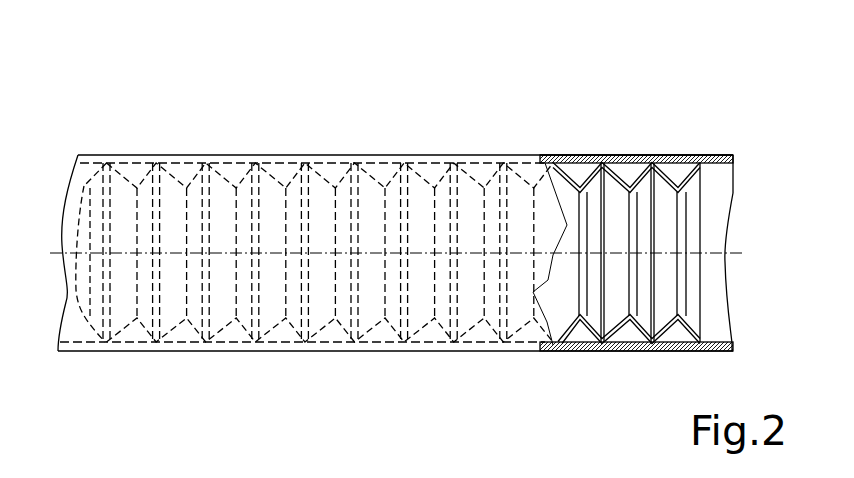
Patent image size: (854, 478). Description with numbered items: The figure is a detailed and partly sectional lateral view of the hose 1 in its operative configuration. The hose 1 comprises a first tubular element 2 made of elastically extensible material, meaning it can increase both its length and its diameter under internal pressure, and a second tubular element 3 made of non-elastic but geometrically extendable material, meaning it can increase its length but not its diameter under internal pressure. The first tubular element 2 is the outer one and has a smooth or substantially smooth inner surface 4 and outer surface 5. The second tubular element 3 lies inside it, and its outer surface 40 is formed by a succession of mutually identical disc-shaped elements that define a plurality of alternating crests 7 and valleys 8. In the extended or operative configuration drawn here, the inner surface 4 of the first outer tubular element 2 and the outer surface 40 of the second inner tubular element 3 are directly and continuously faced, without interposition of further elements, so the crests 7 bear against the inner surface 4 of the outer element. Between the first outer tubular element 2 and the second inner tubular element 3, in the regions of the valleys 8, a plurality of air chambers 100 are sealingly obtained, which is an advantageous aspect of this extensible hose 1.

The hose 1 is at (488, 149).
The first tubular element 2 is at (612, 150).
The second tubular element 3 is at (627, 336).
The inner surface 4 is at (735, 188).
The outer surface 5 is at (698, 154).
The crests 7 is at (210, 160).
The valleys 8 is at (278, 338).
The outer surface 40 is at (666, 172).
The air chambers 100 is at (641, 337).